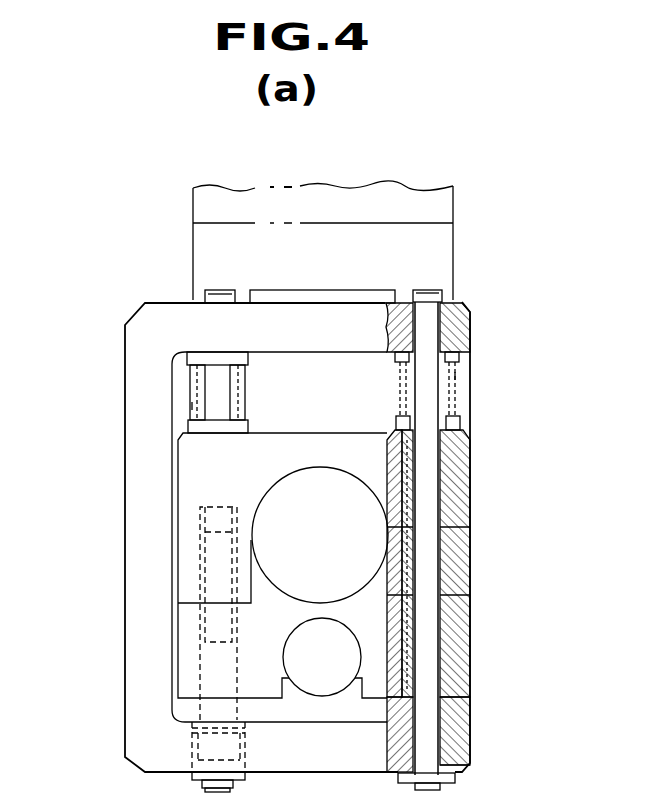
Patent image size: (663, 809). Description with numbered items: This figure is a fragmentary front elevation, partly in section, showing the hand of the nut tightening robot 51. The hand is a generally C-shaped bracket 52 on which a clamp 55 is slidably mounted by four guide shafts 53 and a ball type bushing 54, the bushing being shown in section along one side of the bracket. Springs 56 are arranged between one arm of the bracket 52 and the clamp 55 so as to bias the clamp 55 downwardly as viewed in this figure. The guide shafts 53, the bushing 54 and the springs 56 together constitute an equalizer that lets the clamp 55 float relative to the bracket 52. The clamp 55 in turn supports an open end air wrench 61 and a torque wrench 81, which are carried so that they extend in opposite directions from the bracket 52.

The nut tightening robot 51 is at (455, 200).
The bracket 52 is at (125, 366).
The guide shafts 53 is at (192, 397).
The ball type bushing 54 is at (447, 548).
The clamp 55 is at (170, 521).
The springs 56 is at (192, 410).
The open end air wrench 61 is at (262, 557).
The torque wrench 81 is at (282, 676).